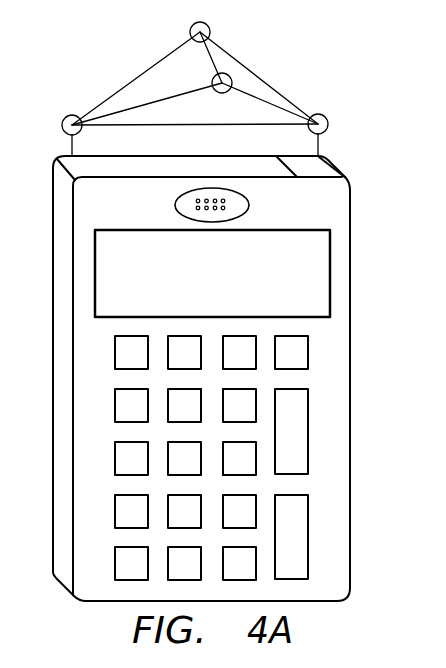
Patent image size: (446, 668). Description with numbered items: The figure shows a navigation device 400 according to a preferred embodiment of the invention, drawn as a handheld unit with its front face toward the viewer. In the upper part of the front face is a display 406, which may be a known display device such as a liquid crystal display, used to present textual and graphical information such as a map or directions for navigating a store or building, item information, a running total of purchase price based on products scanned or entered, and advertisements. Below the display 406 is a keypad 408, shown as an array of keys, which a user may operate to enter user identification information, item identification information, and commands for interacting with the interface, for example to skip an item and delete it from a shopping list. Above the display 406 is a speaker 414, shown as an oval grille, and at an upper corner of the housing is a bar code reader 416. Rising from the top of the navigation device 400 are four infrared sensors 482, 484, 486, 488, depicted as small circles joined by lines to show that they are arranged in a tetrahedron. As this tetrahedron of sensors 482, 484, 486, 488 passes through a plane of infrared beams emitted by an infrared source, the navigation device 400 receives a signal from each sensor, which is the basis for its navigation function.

The navigation device 400 is at (352, 203).
The display 406 is at (358, 227).
The keypad 408 is at (358, 335).
The speaker 414 is at (249, 205).
The bar code reader 416 is at (333, 166).
The infrared sensor 482 is at (72, 115).
The infrared sensor 484 is at (211, 33).
The infrared sensor 486 is at (232, 78).
The infrared sensor 488 is at (328, 123).